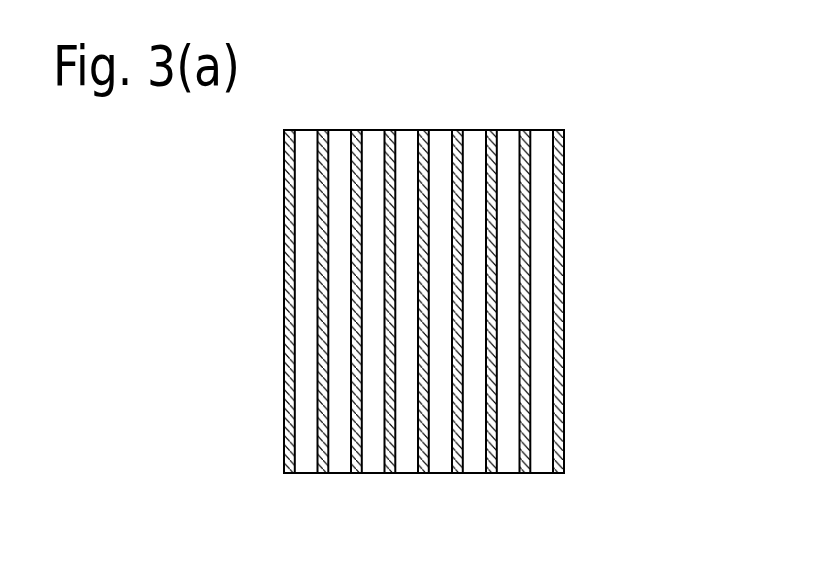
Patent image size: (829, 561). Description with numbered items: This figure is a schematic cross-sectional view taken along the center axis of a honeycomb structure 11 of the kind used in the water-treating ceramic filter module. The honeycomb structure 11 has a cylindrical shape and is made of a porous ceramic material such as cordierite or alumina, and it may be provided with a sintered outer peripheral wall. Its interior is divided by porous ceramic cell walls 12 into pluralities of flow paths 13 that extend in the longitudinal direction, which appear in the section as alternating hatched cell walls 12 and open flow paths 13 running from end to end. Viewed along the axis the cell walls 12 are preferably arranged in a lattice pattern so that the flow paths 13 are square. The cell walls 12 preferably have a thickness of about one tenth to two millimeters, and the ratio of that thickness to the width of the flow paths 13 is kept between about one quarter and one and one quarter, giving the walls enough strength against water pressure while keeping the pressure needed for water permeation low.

The honeycomb structure 11 is at (569, 178).
The porous ceramic cell walls 12 is at (531, 280).
The flow paths 13 is at (540, 360).